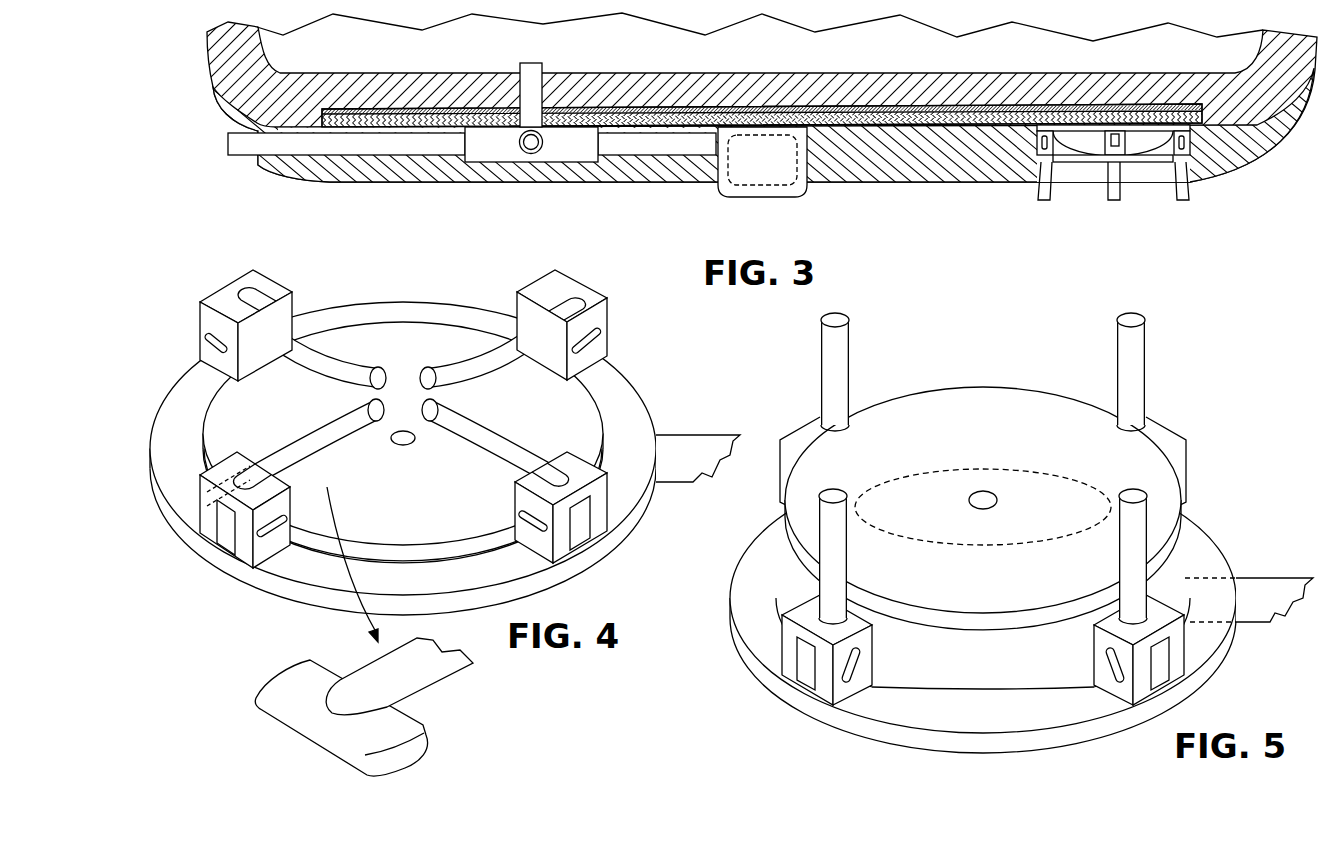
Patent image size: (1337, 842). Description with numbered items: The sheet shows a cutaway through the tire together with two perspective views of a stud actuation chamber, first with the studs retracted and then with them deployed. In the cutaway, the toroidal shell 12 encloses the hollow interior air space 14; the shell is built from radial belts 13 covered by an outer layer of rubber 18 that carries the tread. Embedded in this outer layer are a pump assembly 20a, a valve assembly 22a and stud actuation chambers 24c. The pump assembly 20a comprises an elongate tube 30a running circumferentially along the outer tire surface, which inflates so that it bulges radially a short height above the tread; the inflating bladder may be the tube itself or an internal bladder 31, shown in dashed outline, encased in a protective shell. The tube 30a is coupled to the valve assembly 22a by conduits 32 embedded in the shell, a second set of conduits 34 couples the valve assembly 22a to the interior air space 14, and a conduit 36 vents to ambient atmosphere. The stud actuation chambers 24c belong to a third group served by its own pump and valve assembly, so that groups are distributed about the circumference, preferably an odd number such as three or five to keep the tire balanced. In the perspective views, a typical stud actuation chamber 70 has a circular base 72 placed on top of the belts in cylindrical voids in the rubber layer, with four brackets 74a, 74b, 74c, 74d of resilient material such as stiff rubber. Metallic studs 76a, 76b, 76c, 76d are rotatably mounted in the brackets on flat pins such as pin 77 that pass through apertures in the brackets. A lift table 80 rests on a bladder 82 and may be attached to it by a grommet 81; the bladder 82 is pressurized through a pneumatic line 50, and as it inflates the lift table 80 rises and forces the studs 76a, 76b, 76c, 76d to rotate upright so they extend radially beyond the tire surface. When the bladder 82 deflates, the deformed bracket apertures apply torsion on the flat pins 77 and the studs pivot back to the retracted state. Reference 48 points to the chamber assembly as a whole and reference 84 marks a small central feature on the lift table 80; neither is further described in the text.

In FIG. 3, the toroidal shell 12 is at (207, 50).
In FIG. 3, the radial belts 13 is at (1113, 132).
In FIG. 3, the hollow interior air space 14 is at (749, 52).
In FIG. 3, the outer layer of rubber 18 is at (335, 184).
In FIG. 3, the pump assembly 20a is at (758, 183).
In FIG. 3, the valve assembly 22a is at (500, 147).
In FIG. 3, the stud actuation chambers 24c is at (1142, 168).
In FIG. 3, the elongate tube 30a is at (722, 196).
In FIG. 3, the internal bladder 31 is at (762, 186).
In FIG. 3, the conduits 32 is at (617, 147).
In FIG. 3, the second set of conduits 34 is at (532, 63).
In FIG. 3, the conduit 36 is at (228, 144).
In FIG. 4, the mounting assembly 48 is at (445, 420).
In FIG. 5, the mounting assembly 48 is at (1023, 532).
In FIG. 4, the pneumatic line 50 is at (680, 492).
In FIG. 5, the pneumatic line 50 is at (1270, 628).
In FIG. 4, the stud actuation chamber 70 is at (427, 458).
In FIG. 5, the stud actuation chamber 70 is at (1006, 608).
In FIG. 4, the circular base 72 is at (622, 548).
In FIG. 5, the circular base 72 is at (1210, 689).
In FIG. 4, the bracket 74a is at (567, 450).
In FIG. 5, the bracket 74a is at (1092, 654).
In FIG. 4, the bracket 74b is at (240, 453).
In FIG. 5, the bracket 74b is at (875, 654).
In FIG. 4, the bracket 74c is at (222, 286).
In FIG. 5, the bracket 74c is at (797, 430).
In FIG. 4, the bracket 74d is at (572, 277).
In FIG. 5, the bracket 74d is at (1165, 430).
In FIG. 4, the stud 76a is at (463, 462).
In FIG. 5, the stud 76a is at (1110, 535).
In FIG. 5, the stud 76b is at (858, 535).
In FIG. 4, the stud 76c is at (348, 350).
In FIG. 5, the stud 76c is at (821, 346).
In FIG. 4, the stud 76d is at (480, 380).
In FIG. 5, the stud 76d is at (1146, 346).
In FIG. 4, the flat pin 77 is at (290, 739).
In FIG. 4, the lift table 80 is at (403, 322).
In FIG. 5, the lift table 80 is at (983, 388).
In FIG. 5, the grommet 81 is at (983, 505).
In FIG. 5, the bladder 82 is at (983, 467).
In FIG. 4, the center aperture 84 is at (403, 445).